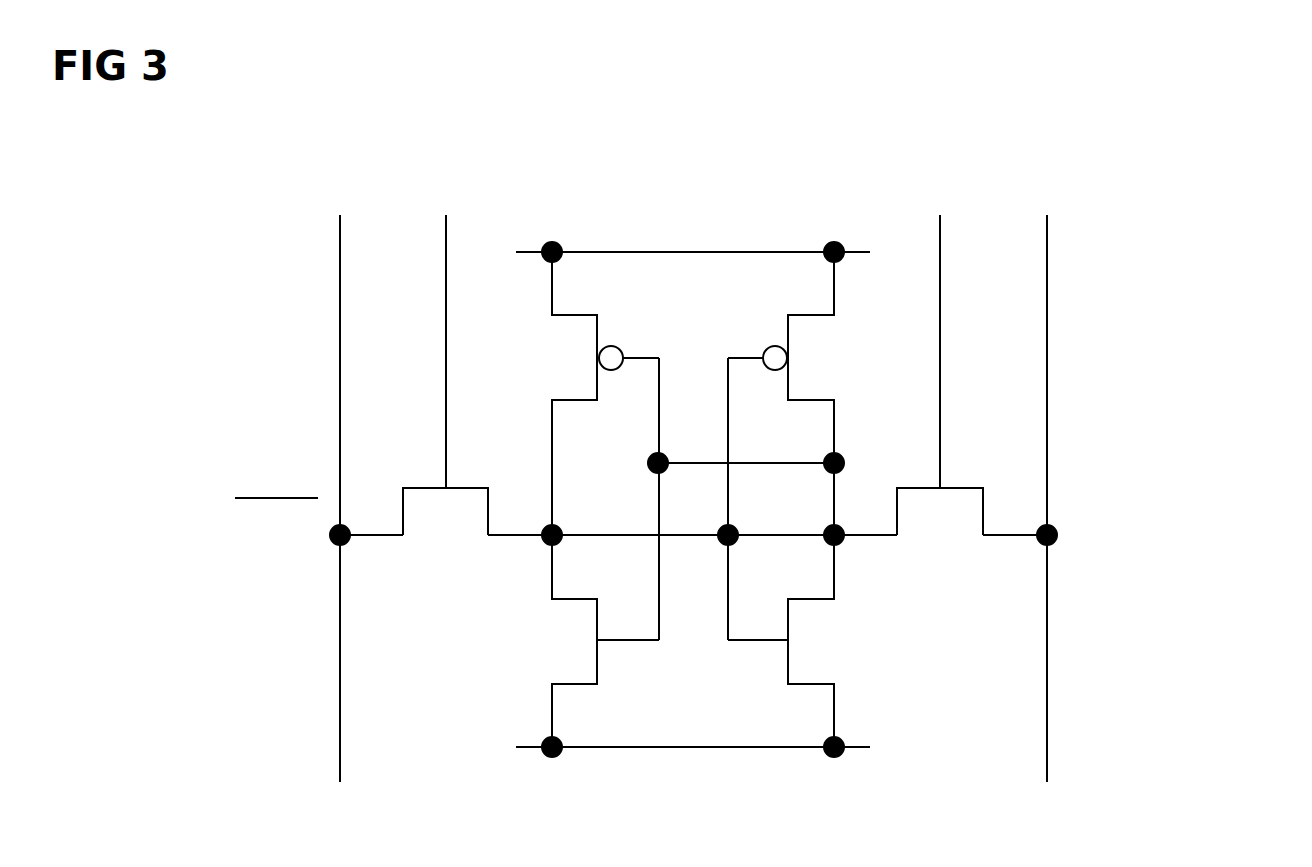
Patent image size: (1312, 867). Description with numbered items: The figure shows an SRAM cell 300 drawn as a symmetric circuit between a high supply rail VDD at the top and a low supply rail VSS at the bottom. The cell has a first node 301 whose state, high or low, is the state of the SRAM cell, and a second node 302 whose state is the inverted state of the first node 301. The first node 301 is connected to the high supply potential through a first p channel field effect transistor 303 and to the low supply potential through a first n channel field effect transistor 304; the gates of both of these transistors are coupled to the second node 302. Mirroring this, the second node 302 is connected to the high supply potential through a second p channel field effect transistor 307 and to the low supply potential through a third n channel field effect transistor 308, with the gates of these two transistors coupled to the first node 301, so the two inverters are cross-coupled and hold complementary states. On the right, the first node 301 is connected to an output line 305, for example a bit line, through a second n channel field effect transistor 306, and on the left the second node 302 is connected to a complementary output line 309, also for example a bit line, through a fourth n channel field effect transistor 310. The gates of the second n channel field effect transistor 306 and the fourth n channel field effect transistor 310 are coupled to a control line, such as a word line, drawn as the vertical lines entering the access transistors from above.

The SRAM cell 300 is at (1234, 133).
The first node 301 is at (840, 528).
The second node 302 is at (555, 528).
The first p channel field effect transistor 303 is at (827, 355).
The first n channel field effect transistor 304 is at (825, 643).
The output line 305 is at (1047, 310).
The second n channel field effect transistor 306 is at (953, 477).
The second p channel field effect transistor 307 is at (563, 352).
The third n channel field effect transistor 308 is at (570, 647).
The complementary output line 309 is at (340, 313).
The fourth n channel field effect transistor 310 is at (415, 477).